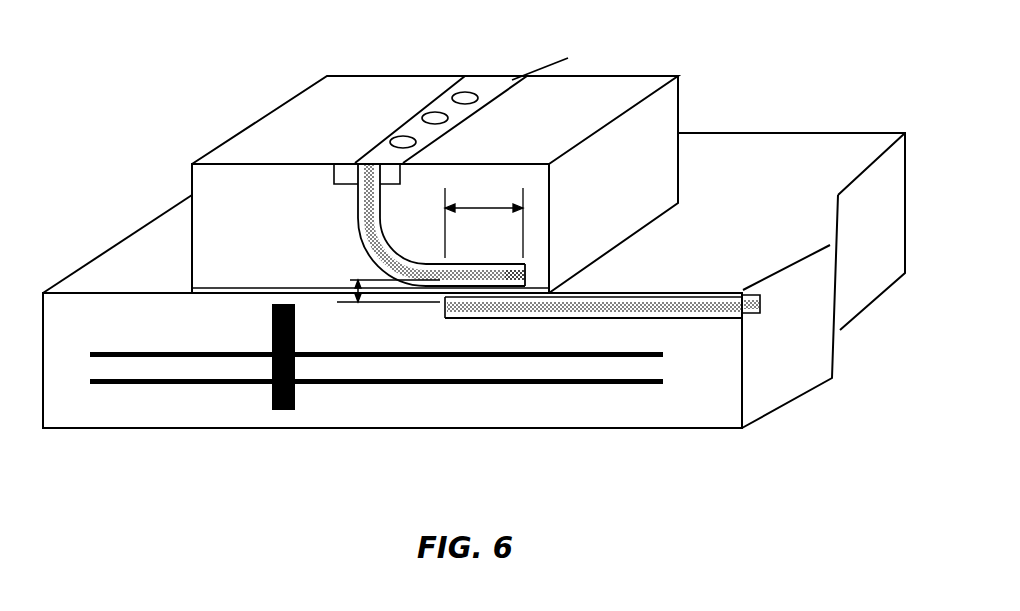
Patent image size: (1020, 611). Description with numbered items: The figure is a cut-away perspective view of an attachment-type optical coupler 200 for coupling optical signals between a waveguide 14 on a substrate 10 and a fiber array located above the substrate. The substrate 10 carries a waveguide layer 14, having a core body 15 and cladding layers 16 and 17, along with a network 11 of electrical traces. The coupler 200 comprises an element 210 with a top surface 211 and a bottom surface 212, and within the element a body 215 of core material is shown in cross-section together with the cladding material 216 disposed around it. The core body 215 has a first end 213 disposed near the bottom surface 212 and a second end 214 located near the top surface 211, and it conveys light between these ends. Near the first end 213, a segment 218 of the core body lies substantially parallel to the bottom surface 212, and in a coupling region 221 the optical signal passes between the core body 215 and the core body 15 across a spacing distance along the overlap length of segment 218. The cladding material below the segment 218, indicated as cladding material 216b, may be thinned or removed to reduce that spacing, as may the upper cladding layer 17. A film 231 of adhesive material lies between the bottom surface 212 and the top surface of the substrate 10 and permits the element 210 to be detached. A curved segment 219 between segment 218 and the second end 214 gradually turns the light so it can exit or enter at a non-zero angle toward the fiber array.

The optical coupler 200 is at (157, 59).
The substrate 10 is at (432, 430).
The network of electrical traces 11 is at (272, 408).
The waveguide layer 14 is at (688, 320).
The core body 15 is at (752, 305).
The cladding layer 16 is at (747, 313).
The upper cladding layer 17 is at (744, 296).
The element 210 is at (292, 104).
The top surface 211 is at (382, 76).
The bottom surface 212 is at (221, 295).
The first end 213 is at (530, 262).
The second end 214 is at (357, 162).
The core body 215 is at (525, 276).
The cladding material 216 is at (525, 267).
The cladding material below segment 216b is at (525, 286).
The segment 218 is at (523, 263).
The curved segment 219 is at (387, 268).
The coupling region 221 is at (460, 313).
The adhesive film 231 is at (553, 287).